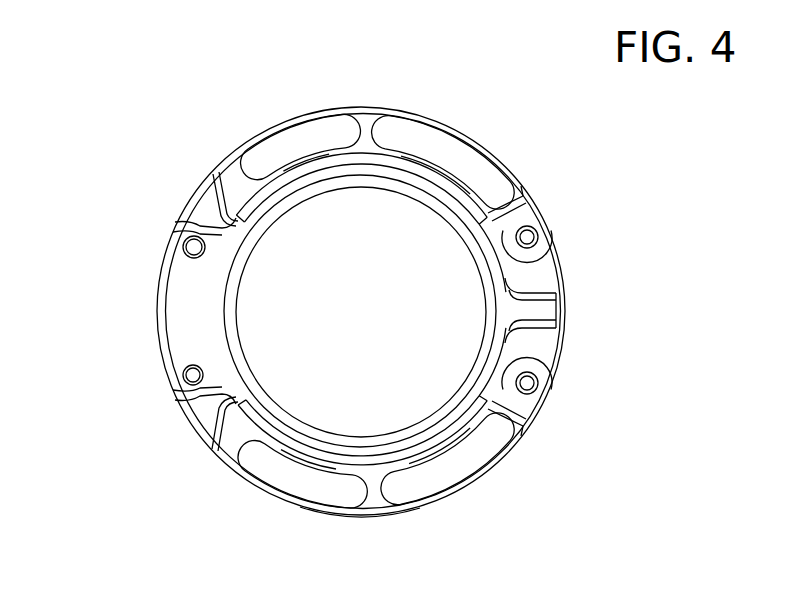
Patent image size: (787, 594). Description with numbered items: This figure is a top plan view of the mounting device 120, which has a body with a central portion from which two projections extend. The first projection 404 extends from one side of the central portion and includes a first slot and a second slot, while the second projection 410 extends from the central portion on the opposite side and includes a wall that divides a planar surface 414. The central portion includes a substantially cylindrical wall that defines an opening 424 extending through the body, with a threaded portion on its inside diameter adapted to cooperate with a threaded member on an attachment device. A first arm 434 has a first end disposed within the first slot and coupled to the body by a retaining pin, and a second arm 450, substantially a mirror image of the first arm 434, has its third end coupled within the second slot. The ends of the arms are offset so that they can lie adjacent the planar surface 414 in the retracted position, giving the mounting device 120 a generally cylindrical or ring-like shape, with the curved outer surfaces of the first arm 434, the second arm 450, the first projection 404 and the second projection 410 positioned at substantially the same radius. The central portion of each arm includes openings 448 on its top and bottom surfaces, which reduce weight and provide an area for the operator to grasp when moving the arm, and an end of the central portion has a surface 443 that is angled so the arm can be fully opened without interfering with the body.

The mounting device 120 is at (161, 163).
The first projection 404 is at (188, 306).
The second projection 410 is at (563, 309).
The planar surface 414 is at (542, 276).
The opening 424 is at (385, 314).
The first arm 434 is at (383, 512).
The surface 443 is at (210, 416).
The openings 448 is at (310, 133).
The second arm 450 is at (553, 211).